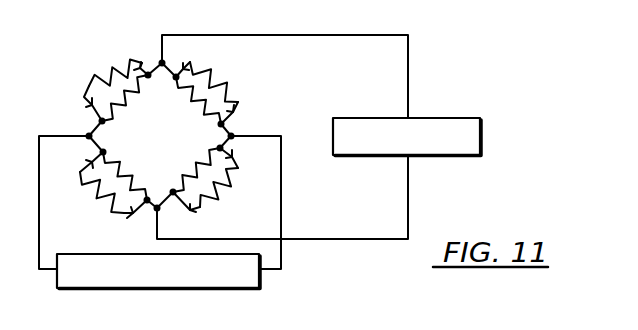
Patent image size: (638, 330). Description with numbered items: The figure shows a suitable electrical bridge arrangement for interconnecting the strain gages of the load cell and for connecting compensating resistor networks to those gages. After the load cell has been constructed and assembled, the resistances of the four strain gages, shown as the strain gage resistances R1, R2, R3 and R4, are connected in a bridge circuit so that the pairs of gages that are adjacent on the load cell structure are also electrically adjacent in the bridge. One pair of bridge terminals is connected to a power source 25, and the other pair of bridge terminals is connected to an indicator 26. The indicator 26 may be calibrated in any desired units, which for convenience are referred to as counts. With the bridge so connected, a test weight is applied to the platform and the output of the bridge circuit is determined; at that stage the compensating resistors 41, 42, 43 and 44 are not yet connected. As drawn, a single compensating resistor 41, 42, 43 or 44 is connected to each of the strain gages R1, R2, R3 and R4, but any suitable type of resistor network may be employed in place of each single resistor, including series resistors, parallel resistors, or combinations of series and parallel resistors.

The power source 25 is at (260, 288).
The indicator 26 is at (482, 118).
The compensating resistor 41 is at (90, 84).
The compensating resistor 42 is at (238, 81).
The compensating resistor 43 is at (233, 193).
The compensating resistor 44 is at (82, 206).
The strain gage resistance R1 is at (134, 101).
The strain gage resistance R2 is at (195, 104).
The strain gage resistance R3 is at (189, 170).
The strain gage resistance R4 is at (130, 167).